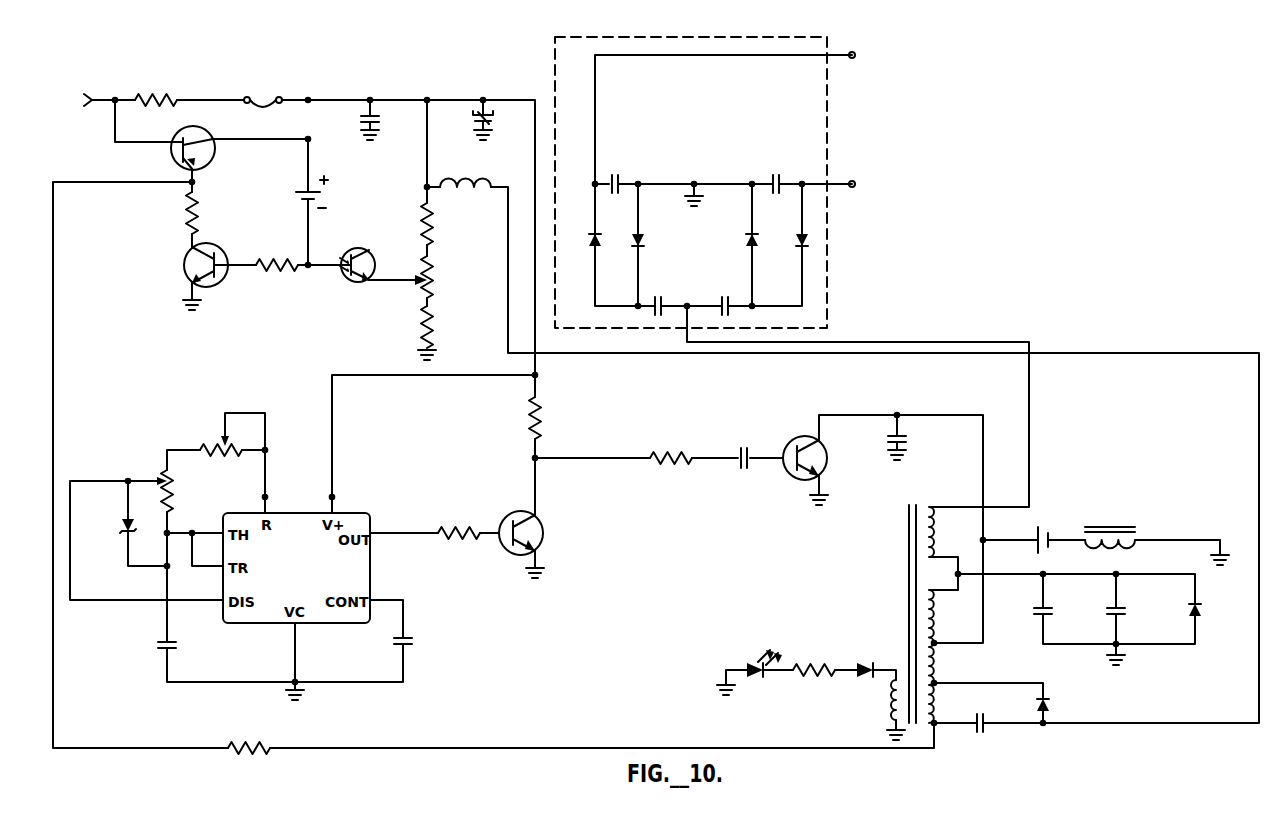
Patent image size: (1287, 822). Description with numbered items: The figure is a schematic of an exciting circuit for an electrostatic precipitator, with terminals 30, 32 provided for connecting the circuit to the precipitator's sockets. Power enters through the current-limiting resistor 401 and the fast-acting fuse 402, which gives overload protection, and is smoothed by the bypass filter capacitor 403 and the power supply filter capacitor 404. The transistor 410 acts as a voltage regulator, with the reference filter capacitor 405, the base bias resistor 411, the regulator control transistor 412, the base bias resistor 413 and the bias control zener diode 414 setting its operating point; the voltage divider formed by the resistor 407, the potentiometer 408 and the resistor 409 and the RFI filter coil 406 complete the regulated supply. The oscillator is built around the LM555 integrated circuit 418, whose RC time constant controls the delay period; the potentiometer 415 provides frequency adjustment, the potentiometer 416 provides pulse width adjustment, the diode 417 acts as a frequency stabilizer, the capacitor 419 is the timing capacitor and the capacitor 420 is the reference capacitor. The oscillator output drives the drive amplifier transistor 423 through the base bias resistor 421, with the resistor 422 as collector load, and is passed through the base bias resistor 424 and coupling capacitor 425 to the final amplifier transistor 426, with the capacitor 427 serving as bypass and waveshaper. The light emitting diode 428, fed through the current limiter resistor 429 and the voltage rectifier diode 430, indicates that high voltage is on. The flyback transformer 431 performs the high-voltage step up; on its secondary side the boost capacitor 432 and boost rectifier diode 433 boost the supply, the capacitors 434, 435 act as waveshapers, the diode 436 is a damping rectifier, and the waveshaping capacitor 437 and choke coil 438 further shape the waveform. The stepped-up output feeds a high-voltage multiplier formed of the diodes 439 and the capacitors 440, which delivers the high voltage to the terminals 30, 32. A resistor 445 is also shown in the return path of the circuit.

The resistor 401 is at (160, 95).
The fuse 402 is at (264, 96).
The capacitor 403 is at (379, 122).
The capacitor 404 is at (489, 120).
The capacitor 405 is at (318, 198).
The coil 406 is at (484, 184).
The resistor 407 is at (433, 224).
The potentiometer 408 is at (433, 277).
The resistor 409 is at (433, 326).
The transistor 410 is at (208, 133).
The resistor 411 is at (198, 212).
The transistor 412 is at (208, 246).
The resistor 413 is at (266, 258).
The zener diode 414 is at (372, 252).
The potentiometer 415 is at (220, 440).
The potentiometer 416 is at (162, 478).
The diode 417 is at (118, 526).
The integrated circuit 418 is at (342, 510).
The capacitor 419 is at (178, 645).
The capacitor 420 is at (414, 641).
The resistor 421 is at (450, 527).
The resistor 422 is at (541, 412).
The transistor 423 is at (543, 515).
The resistor 424 is at (668, 452).
The capacitor 425 is at (742, 446).
The transistor 426 is at (828, 455).
The capacitor 427 is at (906, 440).
The light emitting diode 428 is at (738, 655).
The resistor 429 is at (806, 663).
The diode 430 is at (862, 662).
The flyback transformer 431 is at (908, 558).
The capacitor 432 is at (985, 733).
The diode 433 is at (1050, 704).
The capacitor 434 is at (1052, 610).
The capacitor 435 is at (1125, 610).
The diode 436 is at (1201, 610).
The capacitor 437 is at (1050, 528).
The choke coil 438 is at (1126, 524).
The diode 439 is at (632, 260).
The capacitor 440 is at (710, 286).
The resistor 445 is at (246, 742).
The terminal 30 is at (856, 56).
The terminal 32 is at (856, 185).